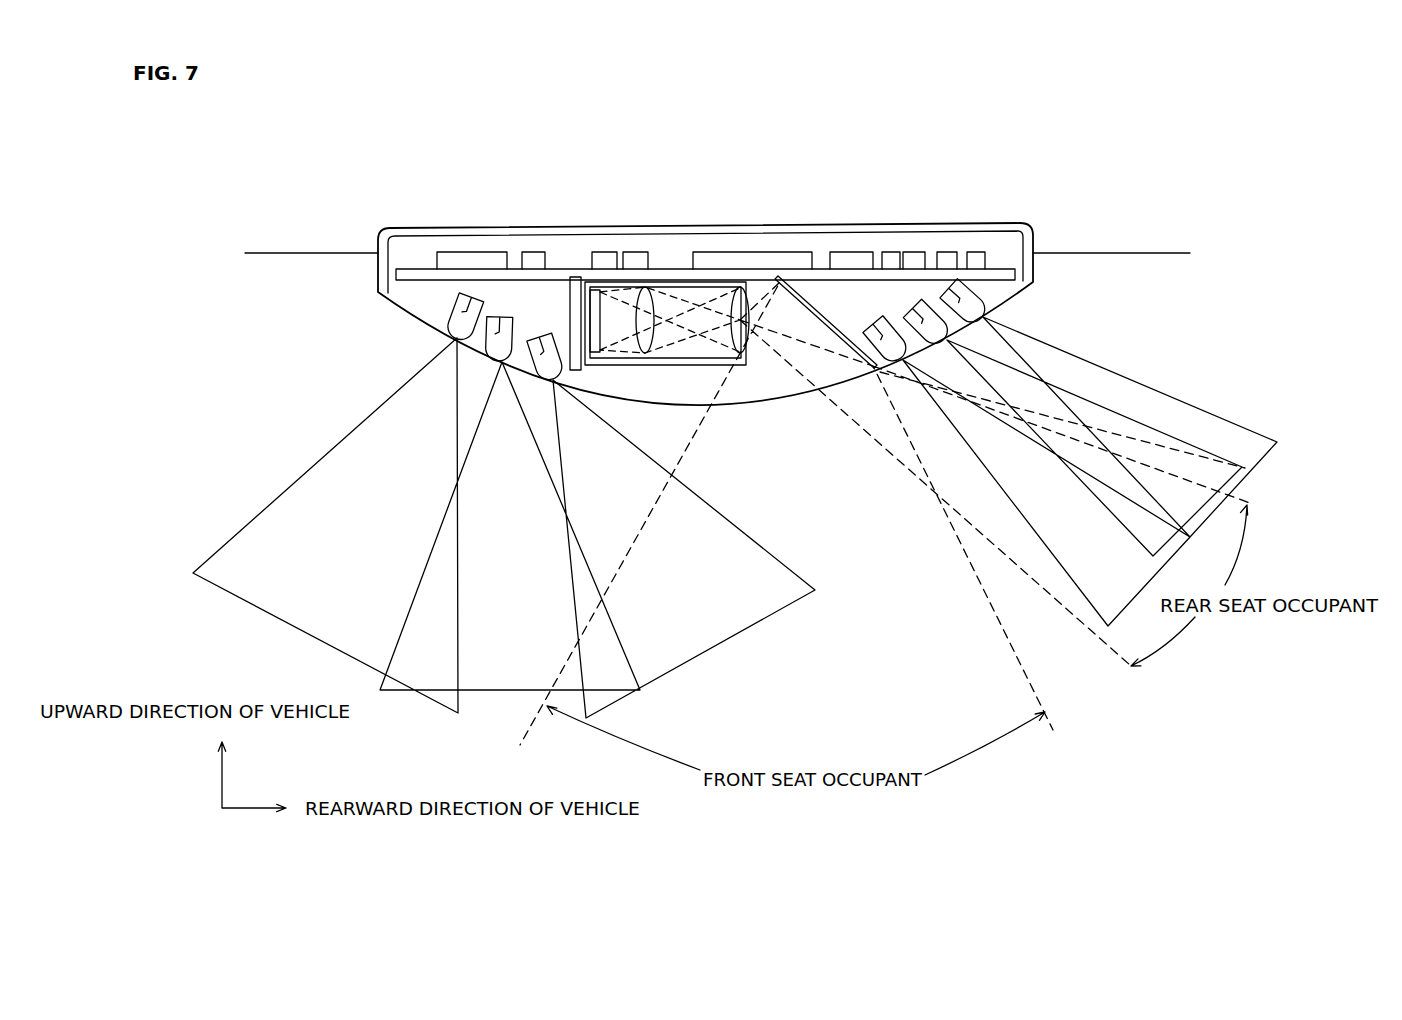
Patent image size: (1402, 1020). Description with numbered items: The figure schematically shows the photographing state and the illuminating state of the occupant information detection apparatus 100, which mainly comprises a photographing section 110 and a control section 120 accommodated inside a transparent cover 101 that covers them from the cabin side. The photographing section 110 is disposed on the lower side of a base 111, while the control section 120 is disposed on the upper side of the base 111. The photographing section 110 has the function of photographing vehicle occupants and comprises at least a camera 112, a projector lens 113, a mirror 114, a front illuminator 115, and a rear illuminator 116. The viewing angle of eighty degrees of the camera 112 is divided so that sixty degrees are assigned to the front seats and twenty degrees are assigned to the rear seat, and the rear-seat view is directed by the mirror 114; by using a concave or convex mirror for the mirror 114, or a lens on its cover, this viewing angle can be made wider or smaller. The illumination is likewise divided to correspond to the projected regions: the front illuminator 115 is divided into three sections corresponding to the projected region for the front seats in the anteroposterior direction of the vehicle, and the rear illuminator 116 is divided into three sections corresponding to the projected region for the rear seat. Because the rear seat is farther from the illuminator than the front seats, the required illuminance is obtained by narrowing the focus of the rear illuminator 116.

The occupant information detection apparatus 100 is at (668, 172).
The transparent cover 101 is at (1008, 312).
The photographing section 110 is at (690, 337).
The base 111 is at (407, 265).
The camera 112 is at (665, 373).
The projector lens 113 is at (752, 280).
The mirror 114 is at (818, 300).
The front illuminator 115 is at (540, 345).
The rear illuminator 116 is at (947, 293).
The control section 120 is at (796, 236).